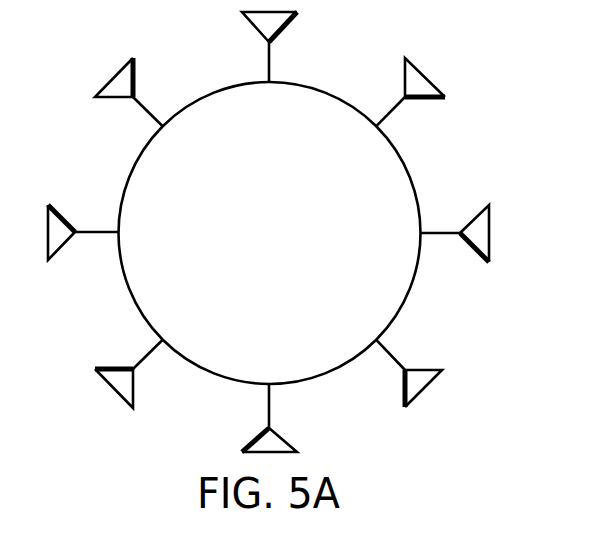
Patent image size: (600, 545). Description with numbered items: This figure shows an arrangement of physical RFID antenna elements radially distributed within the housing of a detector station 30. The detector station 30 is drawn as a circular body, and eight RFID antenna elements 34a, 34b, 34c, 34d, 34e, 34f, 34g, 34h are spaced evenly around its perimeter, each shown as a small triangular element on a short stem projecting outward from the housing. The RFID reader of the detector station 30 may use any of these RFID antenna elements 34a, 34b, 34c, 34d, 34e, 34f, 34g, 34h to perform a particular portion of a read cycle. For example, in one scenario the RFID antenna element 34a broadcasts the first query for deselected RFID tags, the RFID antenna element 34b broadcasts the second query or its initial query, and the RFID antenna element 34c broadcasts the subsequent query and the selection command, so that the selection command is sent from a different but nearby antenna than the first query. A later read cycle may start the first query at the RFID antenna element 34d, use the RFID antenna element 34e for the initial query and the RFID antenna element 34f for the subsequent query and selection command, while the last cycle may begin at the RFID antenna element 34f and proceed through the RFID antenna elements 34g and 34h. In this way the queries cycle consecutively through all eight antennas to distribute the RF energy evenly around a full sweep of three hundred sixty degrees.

The detector station 30 is at (283, 246).
The RFID antenna element 34a is at (268, 60).
The RFID antenna element 34b is at (390, 111).
The RFID antenna element 34c is at (440, 235).
The RFID antenna element 34d is at (391, 355).
The RFID antenna element 34e is at (268, 405).
The RFID antenna element 34f is at (148, 352).
The RFID antenna element 34g is at (92, 235).
The RFID antenna element 34h is at (149, 111).